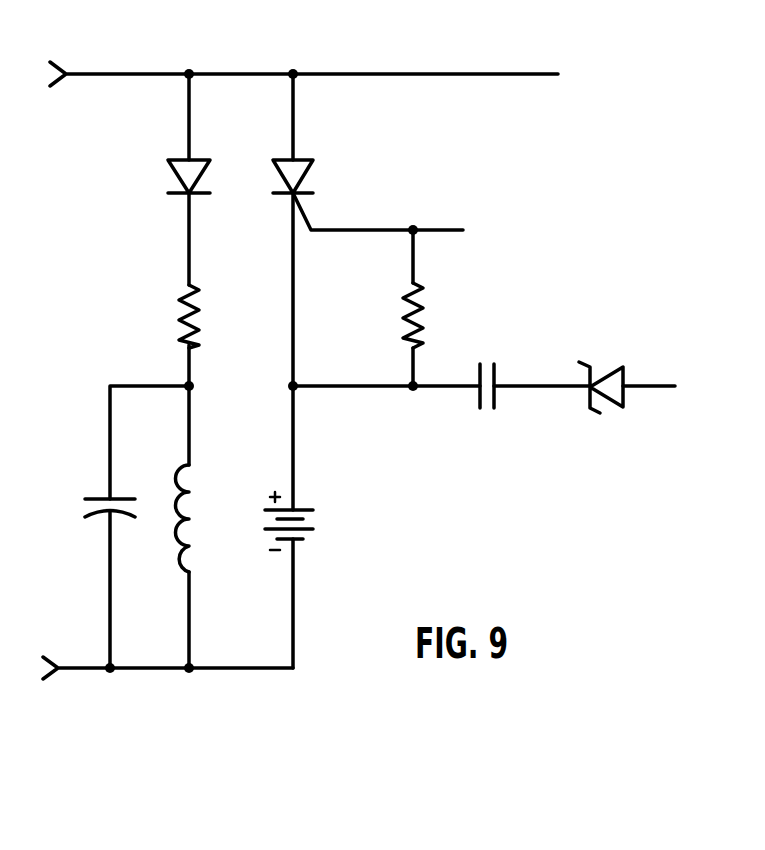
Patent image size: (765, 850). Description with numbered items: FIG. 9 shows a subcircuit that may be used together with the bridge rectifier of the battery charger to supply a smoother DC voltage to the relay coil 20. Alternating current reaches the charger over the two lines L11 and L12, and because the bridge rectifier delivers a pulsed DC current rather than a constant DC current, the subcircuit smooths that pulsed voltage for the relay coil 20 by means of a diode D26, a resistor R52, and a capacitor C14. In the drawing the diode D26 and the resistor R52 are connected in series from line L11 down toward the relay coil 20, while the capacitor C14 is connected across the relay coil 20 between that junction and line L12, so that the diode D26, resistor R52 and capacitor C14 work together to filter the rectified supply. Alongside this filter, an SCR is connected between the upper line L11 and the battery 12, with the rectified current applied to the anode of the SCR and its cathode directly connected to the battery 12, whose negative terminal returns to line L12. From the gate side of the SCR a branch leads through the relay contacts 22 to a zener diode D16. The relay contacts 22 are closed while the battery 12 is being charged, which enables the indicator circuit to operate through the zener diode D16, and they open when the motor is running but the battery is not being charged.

The line L11 is at (148, 72).
The line L12 is at (88, 670).
The diode D26 is at (170, 160).
The element SCR is at (307, 177).
The resistor R52 is at (180, 310).
The relay coil 20 is at (187, 492).
The capacitor C14 is at (96, 490).
The battery 12 is at (312, 529).
The relay contacts 22 is at (478, 378).
The zener diode D16 is at (621, 409).